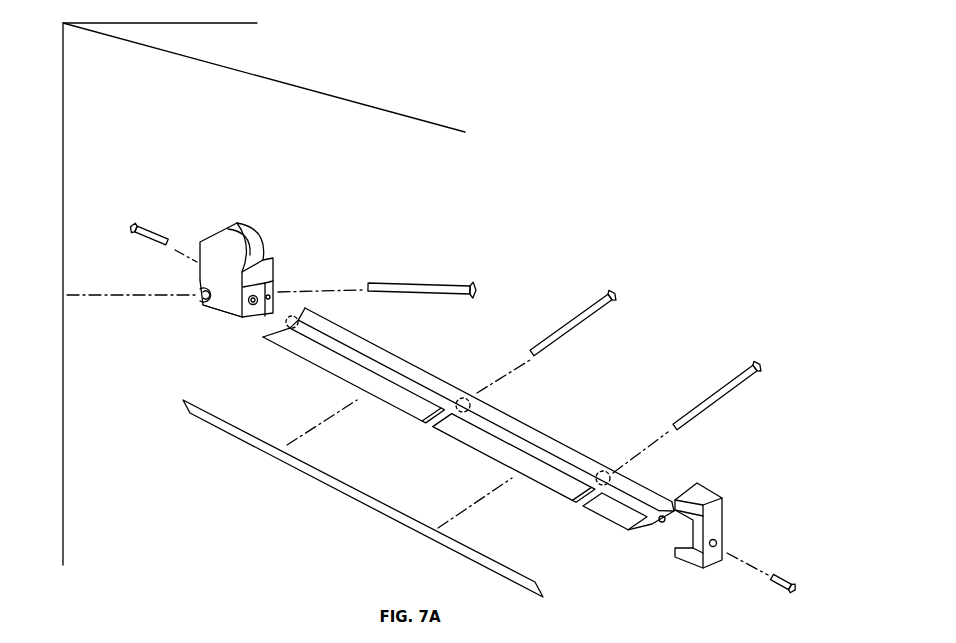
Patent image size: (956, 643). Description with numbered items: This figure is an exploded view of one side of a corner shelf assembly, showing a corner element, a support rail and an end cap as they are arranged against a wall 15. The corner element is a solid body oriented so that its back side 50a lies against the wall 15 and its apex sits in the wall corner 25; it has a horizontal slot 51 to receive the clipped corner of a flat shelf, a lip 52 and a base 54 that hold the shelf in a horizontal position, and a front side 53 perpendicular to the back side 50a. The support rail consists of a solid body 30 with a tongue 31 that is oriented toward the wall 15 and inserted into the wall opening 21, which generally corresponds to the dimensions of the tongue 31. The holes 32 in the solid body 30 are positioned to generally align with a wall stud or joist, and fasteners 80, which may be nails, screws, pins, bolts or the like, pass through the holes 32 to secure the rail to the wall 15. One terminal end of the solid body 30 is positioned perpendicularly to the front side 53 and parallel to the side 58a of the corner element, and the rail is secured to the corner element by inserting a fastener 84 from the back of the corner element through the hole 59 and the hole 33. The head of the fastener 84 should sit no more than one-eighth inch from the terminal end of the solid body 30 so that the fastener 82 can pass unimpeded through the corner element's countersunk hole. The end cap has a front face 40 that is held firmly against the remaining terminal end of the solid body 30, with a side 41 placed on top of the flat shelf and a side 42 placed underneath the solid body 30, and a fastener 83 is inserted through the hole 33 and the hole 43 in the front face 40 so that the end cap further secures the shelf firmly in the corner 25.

The wall 15 is at (108, 505).
The wall opening 21 is at (357, 495).
The wall corner 25 is at (63, 125).
The solid body 30 is at (518, 430).
The tongue 31 is at (355, 377).
The holes 32 is at (428, 430).
The holes 33 is at (291, 327).
The front face 40 is at (713, 522).
The side 41 is at (705, 489).
The side 42 is at (684, 562).
The hole 43 is at (723, 541).
The back side 50a is at (217, 268).
The slot 51 is at (261, 250).
The lip 52 is at (253, 240).
The front side 53 is at (240, 305).
The base 54 is at (277, 270).
The side 58a is at (270, 297).
The hole 59 is at (250, 308).
The fastener 80 is at (598, 318).
The fastener 82 is at (450, 282).
The fastener 83 is at (800, 583).
The fastener 84 is at (123, 224).